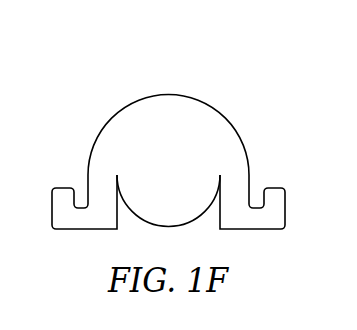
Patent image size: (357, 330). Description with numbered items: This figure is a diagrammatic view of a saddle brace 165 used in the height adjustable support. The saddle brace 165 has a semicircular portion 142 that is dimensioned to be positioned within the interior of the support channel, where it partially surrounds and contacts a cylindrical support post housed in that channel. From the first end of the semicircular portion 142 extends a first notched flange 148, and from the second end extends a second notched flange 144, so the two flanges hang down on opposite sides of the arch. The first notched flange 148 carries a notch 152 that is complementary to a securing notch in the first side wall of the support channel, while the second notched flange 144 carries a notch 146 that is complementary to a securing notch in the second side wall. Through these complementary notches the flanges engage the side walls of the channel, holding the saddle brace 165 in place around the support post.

The saddle brace 165 is at (170, 160).
The semicircular portion 142 is at (118, 113).
The second notched flange 144 is at (77, 228).
The notch 146 is at (78, 205).
The first notched flange 148 is at (261, 229).
The notch 152 is at (261, 205).